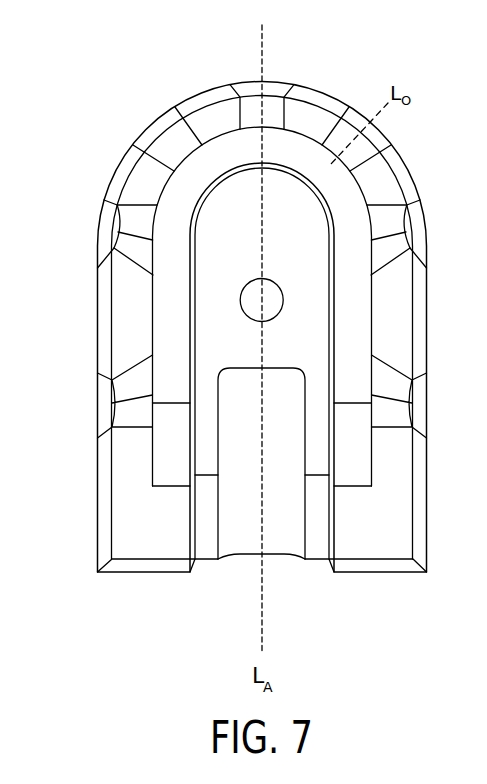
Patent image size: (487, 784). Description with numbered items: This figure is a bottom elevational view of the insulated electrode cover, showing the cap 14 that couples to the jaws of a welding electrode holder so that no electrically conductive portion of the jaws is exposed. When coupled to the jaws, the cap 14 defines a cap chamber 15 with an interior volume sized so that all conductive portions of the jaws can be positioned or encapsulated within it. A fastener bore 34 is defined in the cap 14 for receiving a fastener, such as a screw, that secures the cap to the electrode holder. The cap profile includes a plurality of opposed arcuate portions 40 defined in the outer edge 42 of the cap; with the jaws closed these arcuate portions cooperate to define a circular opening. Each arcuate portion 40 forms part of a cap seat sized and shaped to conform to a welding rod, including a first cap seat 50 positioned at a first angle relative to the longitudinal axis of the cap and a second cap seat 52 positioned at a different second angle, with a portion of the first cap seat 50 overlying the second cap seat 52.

The cap 14 is at (326, 97).
The cap chamber 15 is at (237, 266).
The arcuate portion 40 is at (160, 128).
The outer edge 42 is at (398, 343).
The first cap seat 50 is at (132, 243).
The second cap seat 52 is at (137, 222).
The fastener bore 34 is at (274, 298).